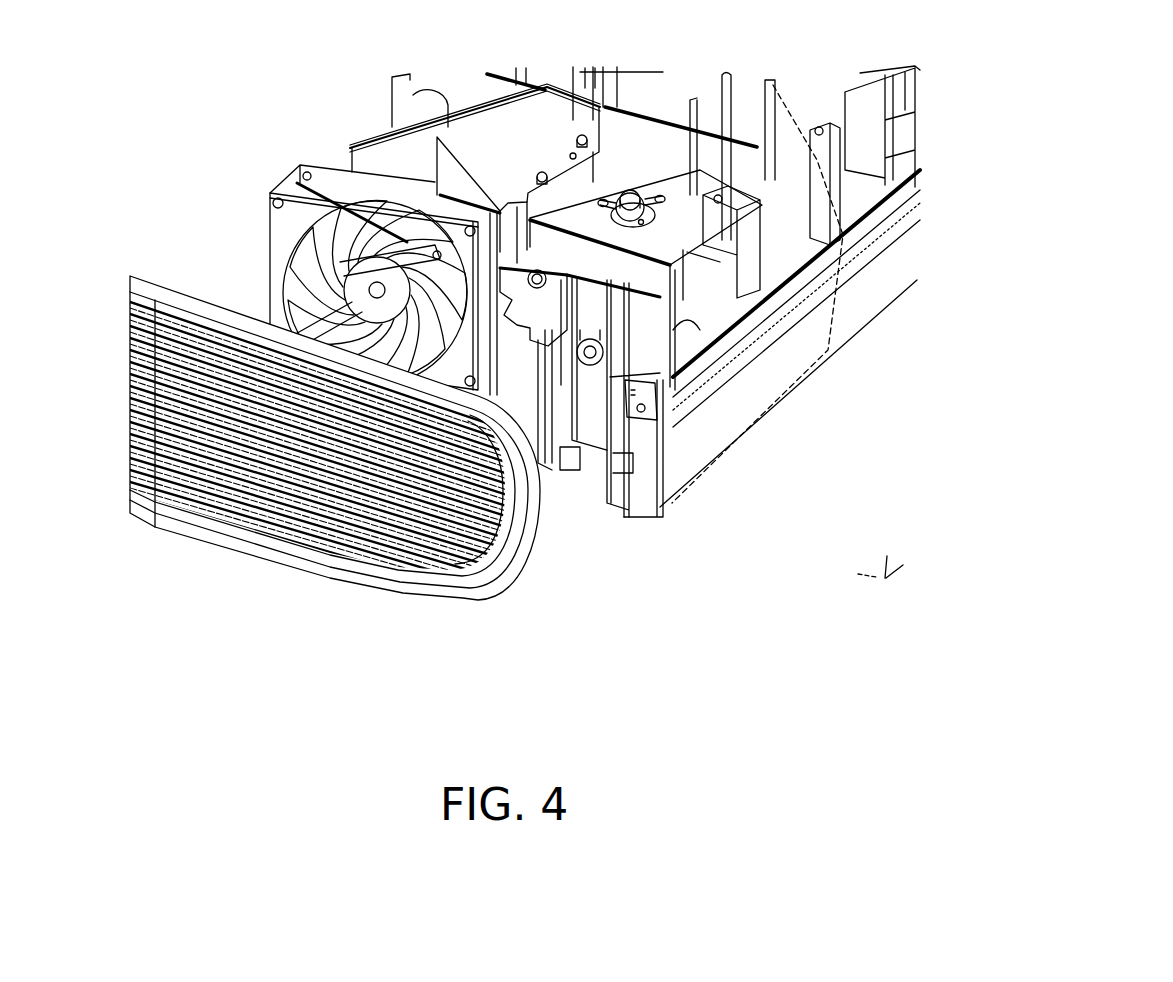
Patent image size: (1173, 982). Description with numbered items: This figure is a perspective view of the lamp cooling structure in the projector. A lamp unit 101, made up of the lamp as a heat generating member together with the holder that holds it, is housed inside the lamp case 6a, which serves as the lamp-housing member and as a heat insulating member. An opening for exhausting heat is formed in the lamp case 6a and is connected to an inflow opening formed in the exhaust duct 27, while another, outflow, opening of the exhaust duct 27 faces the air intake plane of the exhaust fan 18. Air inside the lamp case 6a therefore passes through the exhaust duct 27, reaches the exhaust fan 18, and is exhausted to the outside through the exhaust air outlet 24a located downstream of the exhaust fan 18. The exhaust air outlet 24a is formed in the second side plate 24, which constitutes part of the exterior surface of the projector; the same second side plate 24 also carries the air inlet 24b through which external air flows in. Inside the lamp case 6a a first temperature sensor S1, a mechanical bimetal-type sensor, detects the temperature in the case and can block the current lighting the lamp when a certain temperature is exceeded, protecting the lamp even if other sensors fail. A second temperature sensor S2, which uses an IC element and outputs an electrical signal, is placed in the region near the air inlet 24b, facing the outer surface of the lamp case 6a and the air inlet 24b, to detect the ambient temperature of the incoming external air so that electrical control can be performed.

The exhaust fan 18 is at (283, 237).
The exhaust duct 27 is at (493, 150).
The first temperature sensor S1 is at (640, 200).
The second temperature sensor S2 is at (645, 423).
The lamp case 6a is at (703, 230).
The lamp unit 101 is at (700, 228).
The second side plate 24 is at (414, 477).
The exhaust air outlet 24a is at (273, 452).
The air inlet 24b is at (417, 510).